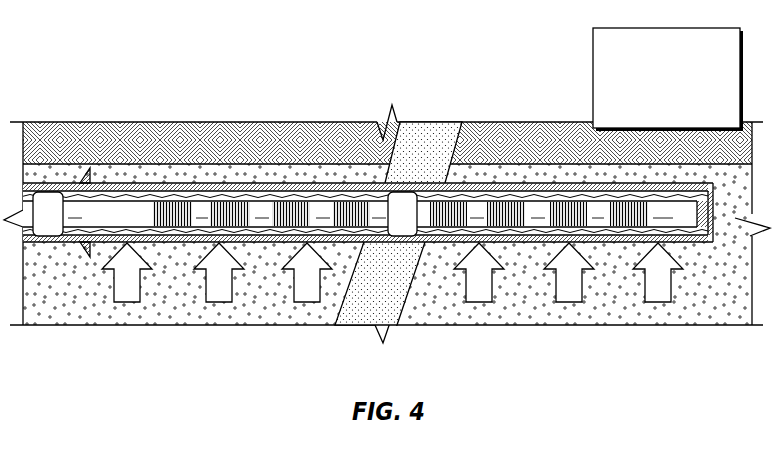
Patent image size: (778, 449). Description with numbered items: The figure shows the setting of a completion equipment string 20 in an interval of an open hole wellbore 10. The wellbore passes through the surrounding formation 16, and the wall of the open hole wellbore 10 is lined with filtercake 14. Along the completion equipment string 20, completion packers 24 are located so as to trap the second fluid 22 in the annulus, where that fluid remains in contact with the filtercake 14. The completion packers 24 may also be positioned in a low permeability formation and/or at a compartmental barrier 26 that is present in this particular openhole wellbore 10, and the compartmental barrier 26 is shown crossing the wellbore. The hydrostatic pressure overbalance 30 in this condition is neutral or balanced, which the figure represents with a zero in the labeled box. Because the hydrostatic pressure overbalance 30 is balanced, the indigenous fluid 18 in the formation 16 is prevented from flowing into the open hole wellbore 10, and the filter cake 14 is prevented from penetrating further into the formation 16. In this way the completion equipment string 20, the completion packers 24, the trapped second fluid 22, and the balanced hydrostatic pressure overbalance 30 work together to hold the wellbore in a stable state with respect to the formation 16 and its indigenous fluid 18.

The open hole wellbore 10 is at (368, 167).
The filtercake 14 is at (275, 183).
The formation 16 is at (58, 307).
The indigenous fluid 18 is at (205, 285).
The completion equipment string 20 is at (101, 203).
The second fluid 22 is at (165, 198).
The completion packers 24 is at (48, 203).
The compartmental barrier 26 is at (357, 308).
The hydrostatic pressure overbalance 30 is at (592, 78).